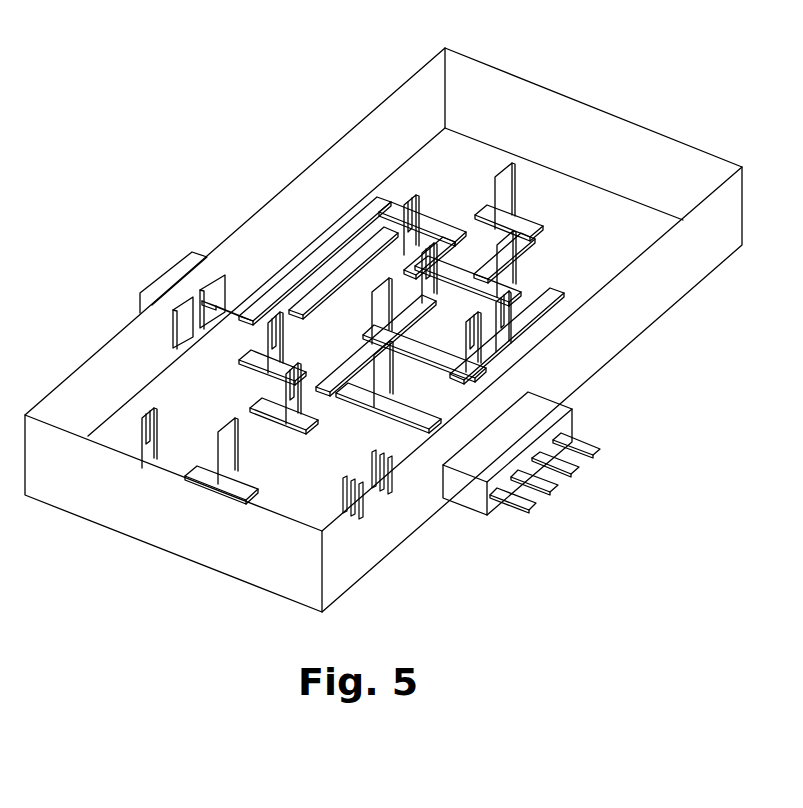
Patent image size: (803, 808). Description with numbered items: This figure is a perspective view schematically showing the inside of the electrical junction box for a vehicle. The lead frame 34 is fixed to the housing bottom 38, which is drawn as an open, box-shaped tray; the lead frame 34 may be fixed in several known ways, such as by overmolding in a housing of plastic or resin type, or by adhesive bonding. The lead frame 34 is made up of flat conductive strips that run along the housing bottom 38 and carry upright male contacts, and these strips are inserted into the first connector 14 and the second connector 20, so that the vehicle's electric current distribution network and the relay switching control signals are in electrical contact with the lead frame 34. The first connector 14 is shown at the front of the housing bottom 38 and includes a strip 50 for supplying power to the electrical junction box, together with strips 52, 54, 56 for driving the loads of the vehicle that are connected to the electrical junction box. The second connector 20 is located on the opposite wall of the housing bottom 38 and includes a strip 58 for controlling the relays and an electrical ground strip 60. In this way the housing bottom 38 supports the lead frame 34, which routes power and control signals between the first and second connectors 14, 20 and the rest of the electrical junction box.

The first connector 14 is at (487, 497).
The second connector 20 is at (171, 272).
The lead frame 34 is at (400, 178).
The housing bottom 38 is at (574, 85).
The strip 50 is at (514, 494).
The strip 52 is at (547, 478).
The strip 54 is at (570, 458).
The strip 56 is at (595, 439).
The strip 58 is at (212, 297).
The electrical ground strip 60 is at (181, 323).